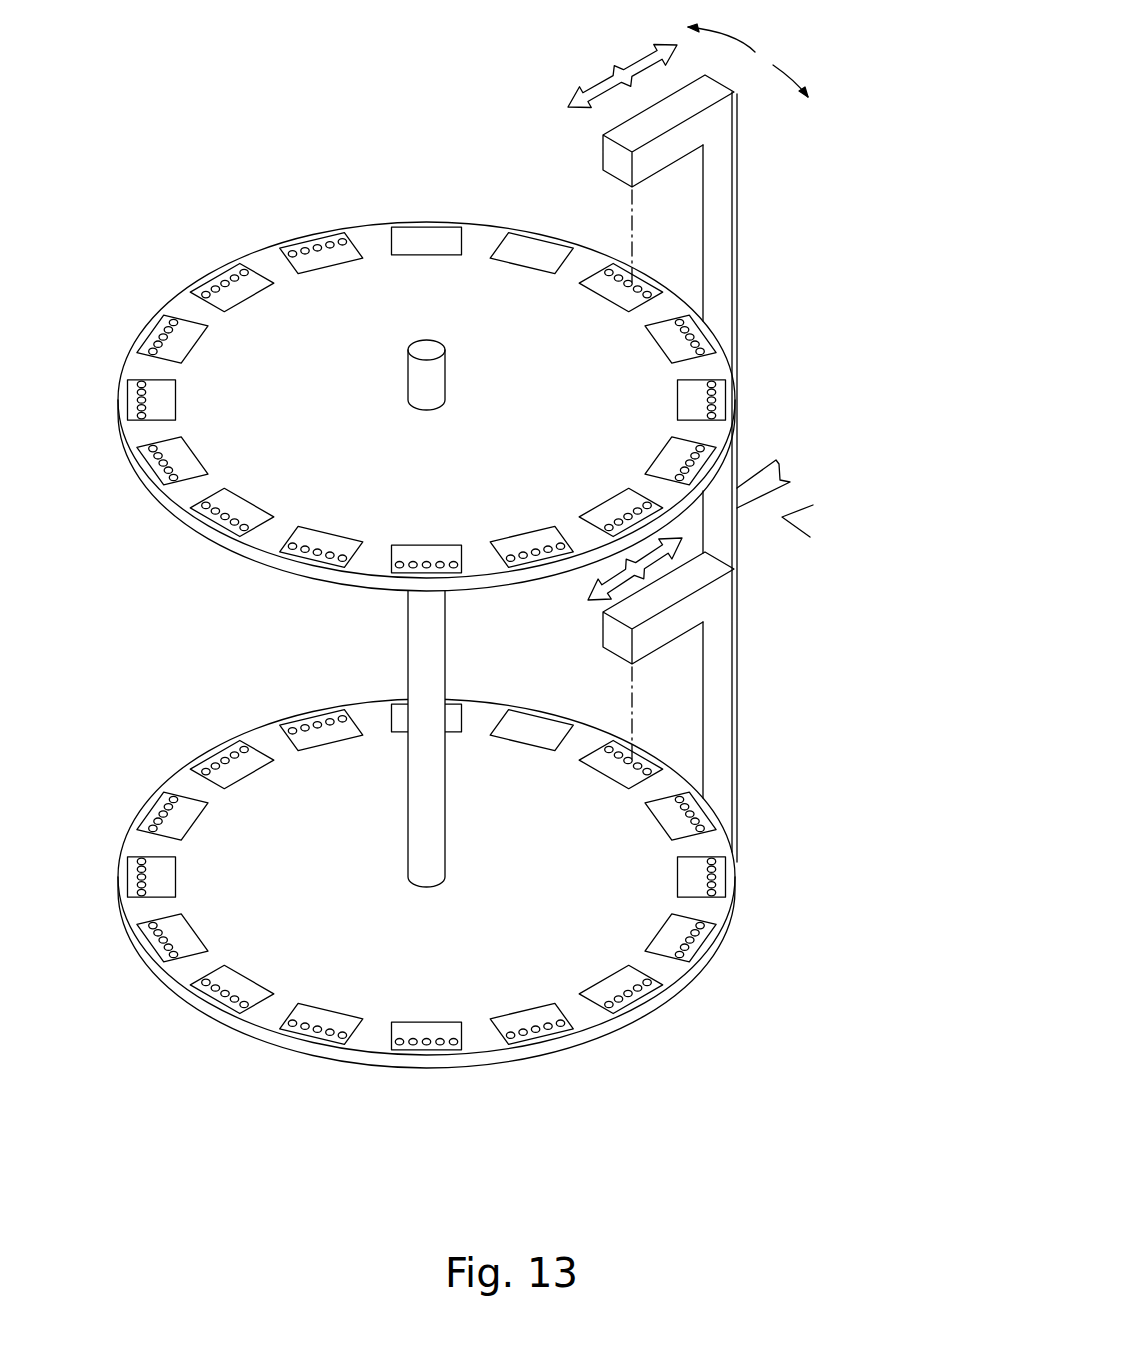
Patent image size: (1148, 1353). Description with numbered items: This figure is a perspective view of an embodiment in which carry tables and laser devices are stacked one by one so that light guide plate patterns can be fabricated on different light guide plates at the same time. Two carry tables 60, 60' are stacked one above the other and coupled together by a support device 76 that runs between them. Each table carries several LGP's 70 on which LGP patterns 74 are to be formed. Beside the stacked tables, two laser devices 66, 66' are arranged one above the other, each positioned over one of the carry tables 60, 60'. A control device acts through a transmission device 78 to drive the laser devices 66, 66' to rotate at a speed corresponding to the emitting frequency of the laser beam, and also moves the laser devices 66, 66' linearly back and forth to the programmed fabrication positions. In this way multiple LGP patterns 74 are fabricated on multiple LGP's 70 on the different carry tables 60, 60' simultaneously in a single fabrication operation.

The carry table 60 is at (426, 916).
The carry table 60' is at (412, 419).
The laser device 66 is at (725, 648).
The laser device 66' is at (724, 153).
The LGP 70 is at (655, 287).
The LGP pattern 74 is at (713, 407).
The support device 76 is at (422, 657).
The transmission device 78 is at (790, 520).